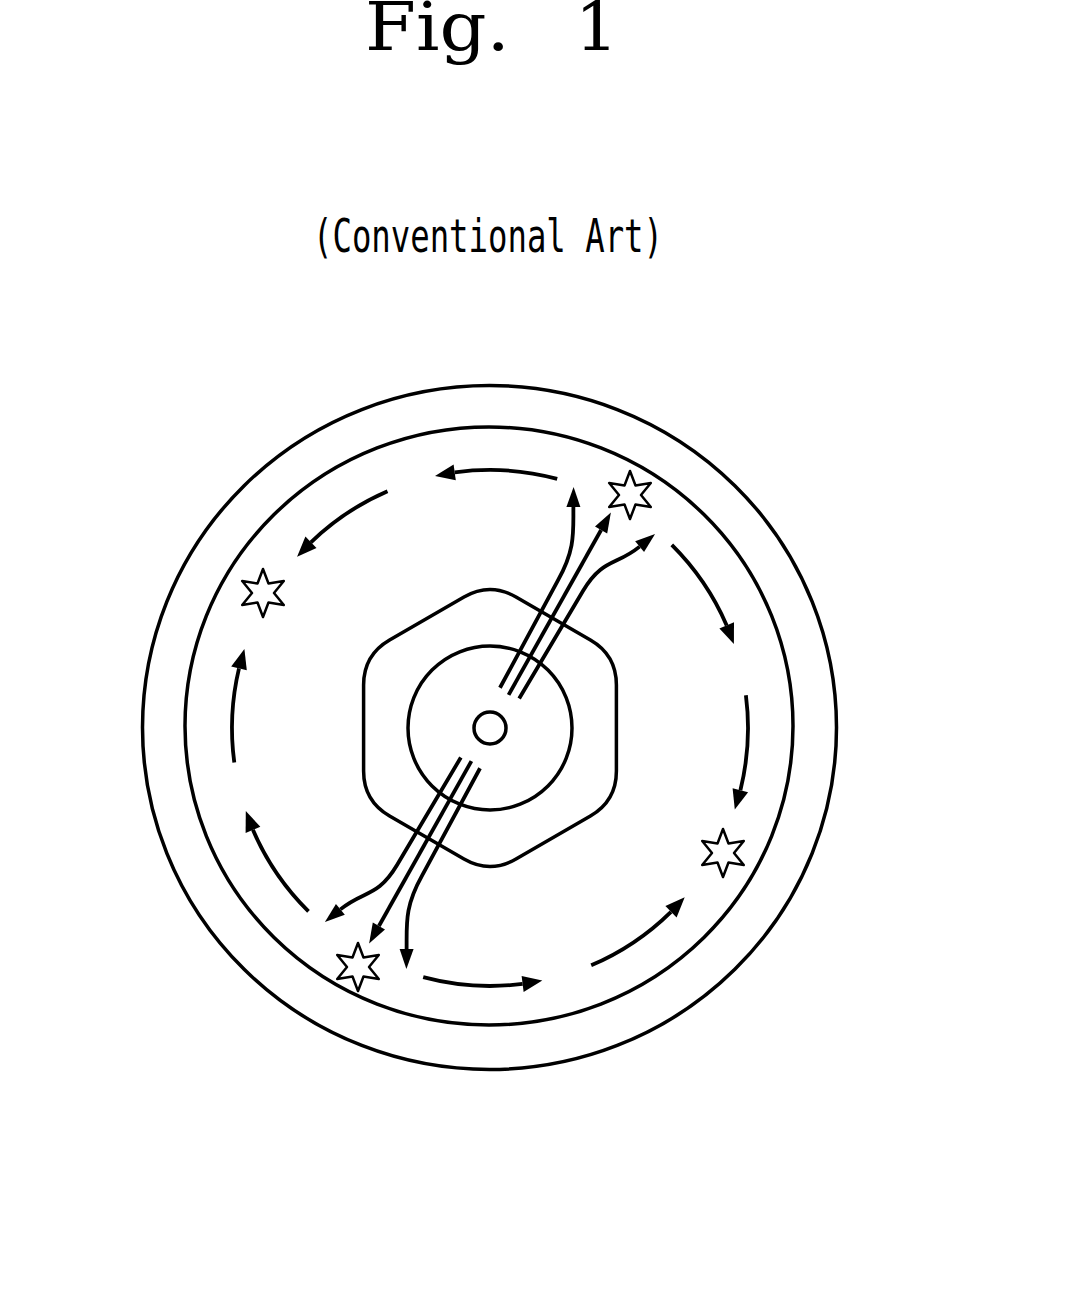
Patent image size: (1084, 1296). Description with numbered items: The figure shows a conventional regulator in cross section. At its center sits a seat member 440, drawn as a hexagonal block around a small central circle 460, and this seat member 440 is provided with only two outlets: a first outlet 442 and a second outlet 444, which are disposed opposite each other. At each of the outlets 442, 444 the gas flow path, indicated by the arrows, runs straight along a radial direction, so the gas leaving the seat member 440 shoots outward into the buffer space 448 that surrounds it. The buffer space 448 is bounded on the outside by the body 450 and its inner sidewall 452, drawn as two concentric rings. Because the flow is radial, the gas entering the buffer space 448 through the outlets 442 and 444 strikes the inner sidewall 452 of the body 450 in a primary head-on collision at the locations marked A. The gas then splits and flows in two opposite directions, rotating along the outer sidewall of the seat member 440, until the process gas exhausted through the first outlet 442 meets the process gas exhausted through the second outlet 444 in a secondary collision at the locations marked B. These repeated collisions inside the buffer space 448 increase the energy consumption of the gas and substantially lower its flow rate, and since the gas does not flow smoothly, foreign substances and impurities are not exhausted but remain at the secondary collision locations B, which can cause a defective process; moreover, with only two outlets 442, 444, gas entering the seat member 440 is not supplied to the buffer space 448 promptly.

The seat member 440 is at (383, 748).
The first outlet 442 is at (445, 843).
The second outlet 444 is at (565, 655).
The buffer space 448 is at (423, 517).
The body 450 is at (715, 962).
The inner sidewall 452 is at (637, 995).
The rotation shaft 460 is at (495, 735).
The primary collision location A is at (655, 470).
The secondary collision location B is at (243, 573).